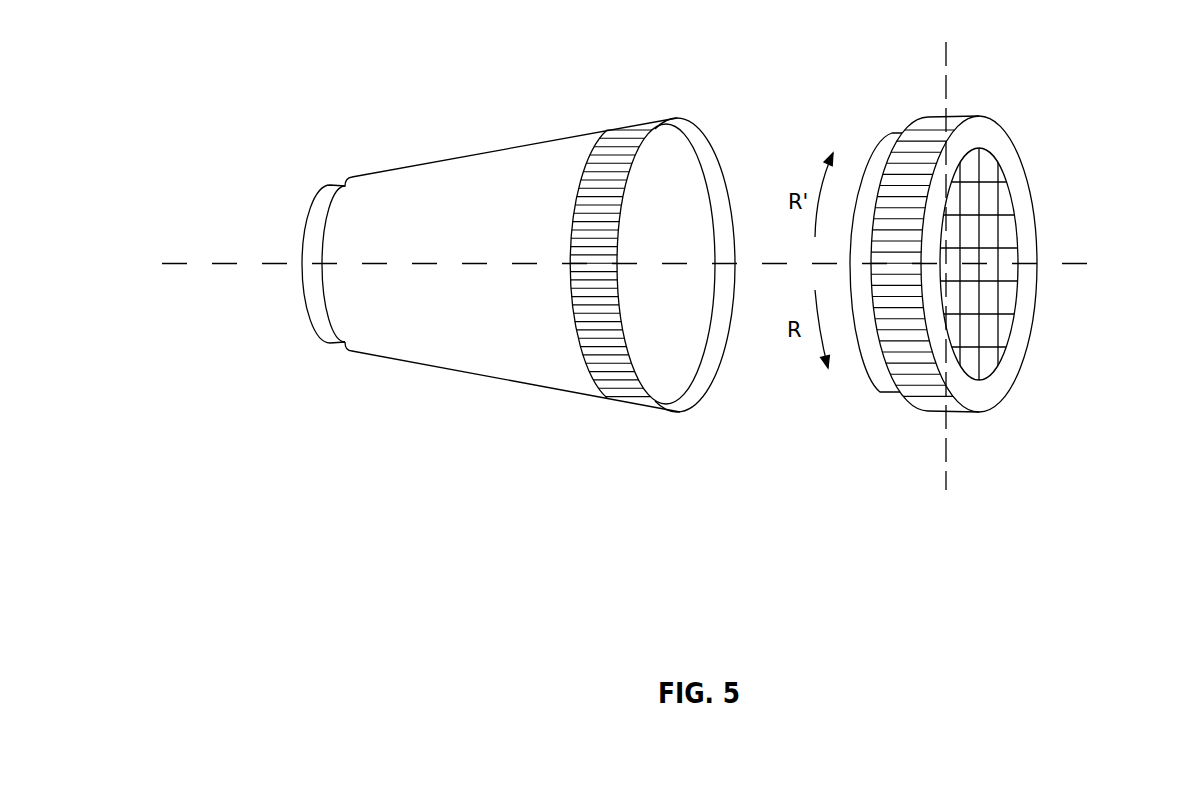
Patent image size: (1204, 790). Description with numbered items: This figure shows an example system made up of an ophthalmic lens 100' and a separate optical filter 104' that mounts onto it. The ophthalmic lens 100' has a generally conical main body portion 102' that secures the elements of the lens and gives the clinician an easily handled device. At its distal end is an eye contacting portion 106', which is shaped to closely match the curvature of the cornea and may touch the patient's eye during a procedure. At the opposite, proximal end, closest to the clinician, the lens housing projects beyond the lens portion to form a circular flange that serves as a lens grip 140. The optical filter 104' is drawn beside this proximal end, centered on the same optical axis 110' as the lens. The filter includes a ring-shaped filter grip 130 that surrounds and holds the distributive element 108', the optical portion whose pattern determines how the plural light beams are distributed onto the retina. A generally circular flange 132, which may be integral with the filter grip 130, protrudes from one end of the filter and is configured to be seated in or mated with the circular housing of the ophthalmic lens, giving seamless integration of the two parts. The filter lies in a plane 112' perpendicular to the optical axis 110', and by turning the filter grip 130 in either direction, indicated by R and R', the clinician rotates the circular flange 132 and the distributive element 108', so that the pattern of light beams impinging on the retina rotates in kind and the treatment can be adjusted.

The ophthalmic lens 100' is at (503, 247).
The main body portion 102' is at (501, 253).
The optical filter 104' is at (902, 237).
The eye contacting portion 106' is at (282, 291).
The distributive element 108' is at (1056, 265).
The optical axis 110' is at (665, 237).
The plane 112' is at (909, 285).
The filter grip 130 is at (967, 115).
The circular flange 132 is at (873, 365).
The lens grip 140 is at (692, 132).